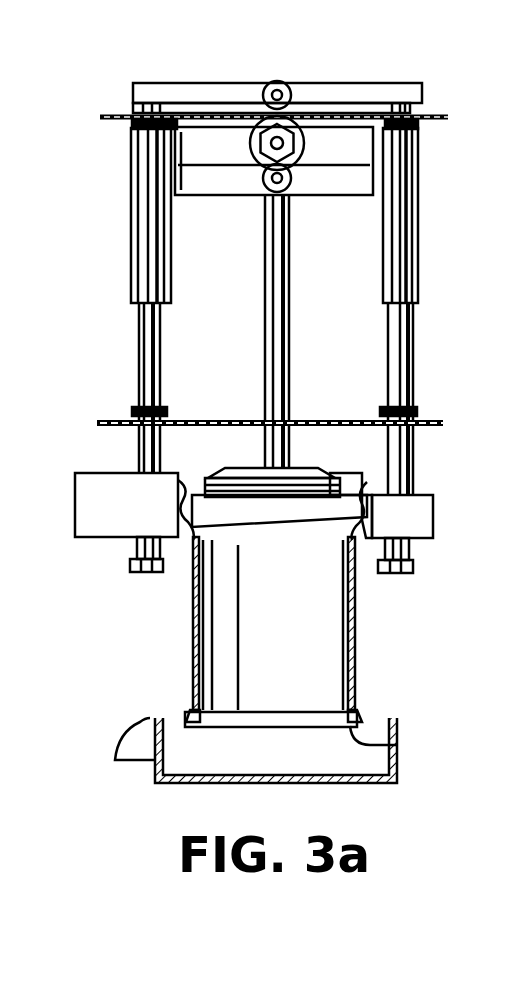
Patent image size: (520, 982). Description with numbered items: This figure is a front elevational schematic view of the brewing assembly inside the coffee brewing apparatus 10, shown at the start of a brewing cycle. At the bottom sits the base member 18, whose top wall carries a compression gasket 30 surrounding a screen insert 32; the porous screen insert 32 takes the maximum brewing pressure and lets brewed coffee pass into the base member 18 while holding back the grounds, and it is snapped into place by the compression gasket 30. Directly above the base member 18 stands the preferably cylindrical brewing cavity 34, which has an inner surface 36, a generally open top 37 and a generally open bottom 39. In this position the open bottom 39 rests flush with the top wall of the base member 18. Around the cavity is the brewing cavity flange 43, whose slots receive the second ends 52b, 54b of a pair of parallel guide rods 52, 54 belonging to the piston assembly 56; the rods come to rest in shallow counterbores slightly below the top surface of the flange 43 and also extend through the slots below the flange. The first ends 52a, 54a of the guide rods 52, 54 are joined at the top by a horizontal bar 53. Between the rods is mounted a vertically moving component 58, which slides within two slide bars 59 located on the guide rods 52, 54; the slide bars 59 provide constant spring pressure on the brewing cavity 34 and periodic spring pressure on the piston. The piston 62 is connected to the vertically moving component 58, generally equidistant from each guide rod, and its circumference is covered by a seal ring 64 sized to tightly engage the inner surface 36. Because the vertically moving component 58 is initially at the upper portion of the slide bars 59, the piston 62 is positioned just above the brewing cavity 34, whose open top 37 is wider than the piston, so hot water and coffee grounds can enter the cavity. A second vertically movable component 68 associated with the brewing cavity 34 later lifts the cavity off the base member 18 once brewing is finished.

The apparatus 10 is at (88, 180).
The base member 18 is at (150, 718).
The compression gasket 30 is at (392, 748).
The screen insert 32 is at (283, 735).
The brewing cavity 34 is at (352, 596).
The inner surface 36 is at (350, 625).
The open top 37 is at (225, 560).
The open bottom 39 is at (360, 716).
The brewing cavity flange 43 is at (110, 490).
The guide rod 52 is at (140, 370).
The first end of guide rod 52a is at (135, 108).
The second end of guide rod 52b is at (137, 557).
The horizontal bar 53 is at (355, 110).
The guide rod 54 is at (412, 352).
The first end of guide rod 54a is at (422, 110).
The second end of guide rod 54b is at (412, 548).
The piston assembly 56 is at (291, 284).
The vertically moving component 58 is at (222, 186).
The slide bars 59 is at (131, 233).
The piston 62 is at (246, 470).
The seal ring 64 is at (331, 480).
The second vertically movable component 68 is at (320, 93).